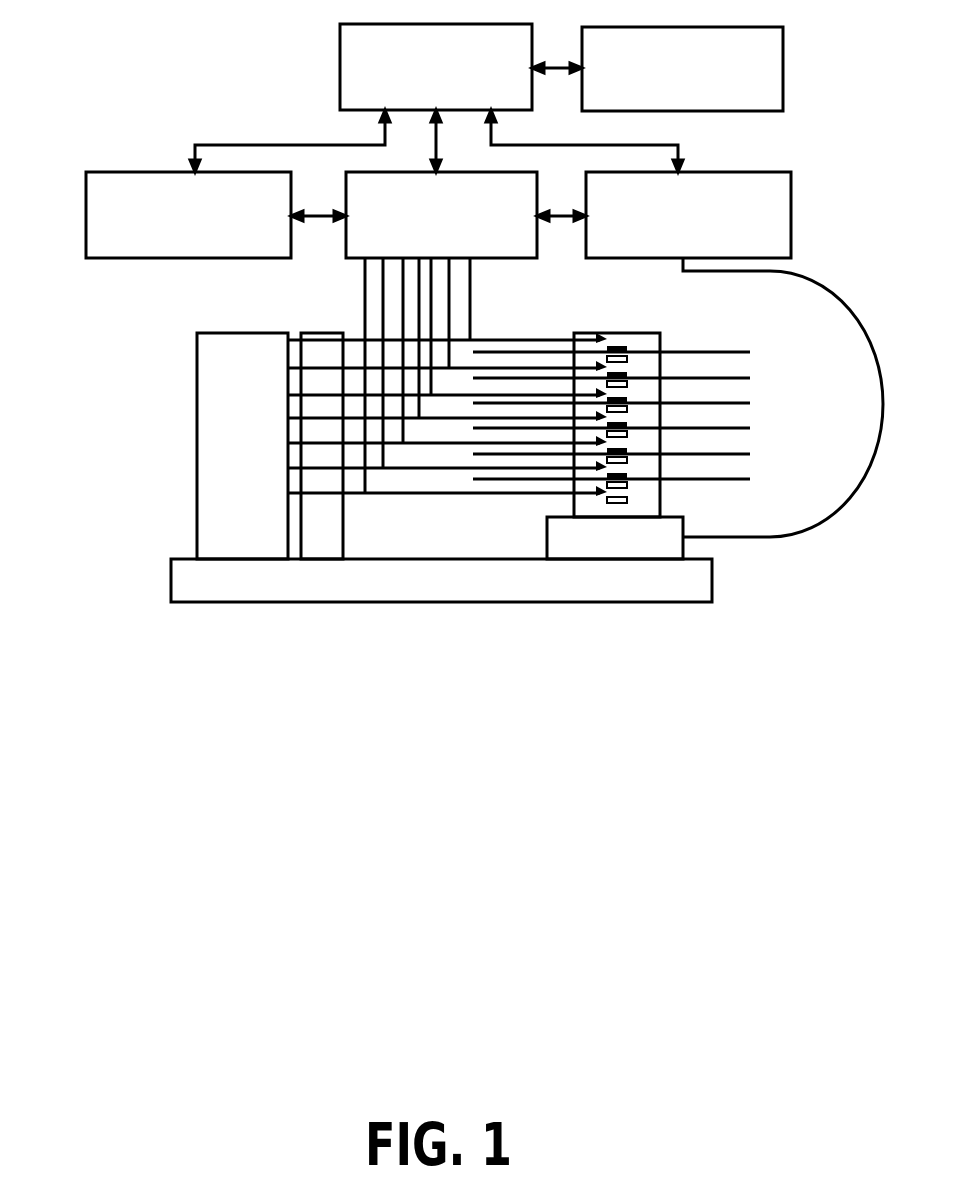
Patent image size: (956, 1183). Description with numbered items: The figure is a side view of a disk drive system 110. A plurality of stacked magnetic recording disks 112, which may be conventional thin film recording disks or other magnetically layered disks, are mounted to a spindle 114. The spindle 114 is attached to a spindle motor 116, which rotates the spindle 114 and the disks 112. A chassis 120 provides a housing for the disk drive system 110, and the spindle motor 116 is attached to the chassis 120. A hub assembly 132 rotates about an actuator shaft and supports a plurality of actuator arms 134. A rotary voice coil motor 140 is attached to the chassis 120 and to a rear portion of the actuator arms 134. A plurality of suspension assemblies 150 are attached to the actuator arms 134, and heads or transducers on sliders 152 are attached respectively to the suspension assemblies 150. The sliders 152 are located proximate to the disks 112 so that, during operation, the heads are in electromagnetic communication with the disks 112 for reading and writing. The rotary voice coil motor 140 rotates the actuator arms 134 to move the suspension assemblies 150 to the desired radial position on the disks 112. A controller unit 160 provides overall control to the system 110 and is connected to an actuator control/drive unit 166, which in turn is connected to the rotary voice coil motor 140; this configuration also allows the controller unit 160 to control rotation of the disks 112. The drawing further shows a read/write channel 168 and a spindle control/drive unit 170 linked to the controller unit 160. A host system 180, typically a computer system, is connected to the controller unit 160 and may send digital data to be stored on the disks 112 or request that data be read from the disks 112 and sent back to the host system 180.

The disk drive system 110 is at (118, 398).
The magnetic recording disks 112 is at (750, 352).
The spindle 114 is at (662, 340).
The spindle motor 116 is at (635, 551).
The chassis 120 is at (461, 592).
The hub assembly 132 is at (327, 332).
The actuator arms 134 is at (445, 493).
The rotary voice coil motor 140 is at (262, 456).
The suspension assemblies 150 is at (604, 362).
The sliders 152 is at (628, 358).
The controller unit 160 is at (417, 100).
The actuator control/drive unit 166 is at (169, 248).
The read/write channel 168 is at (460, 248).
The spindle control/drive 170 is at (707, 248).
The host system 180 is at (702, 90).